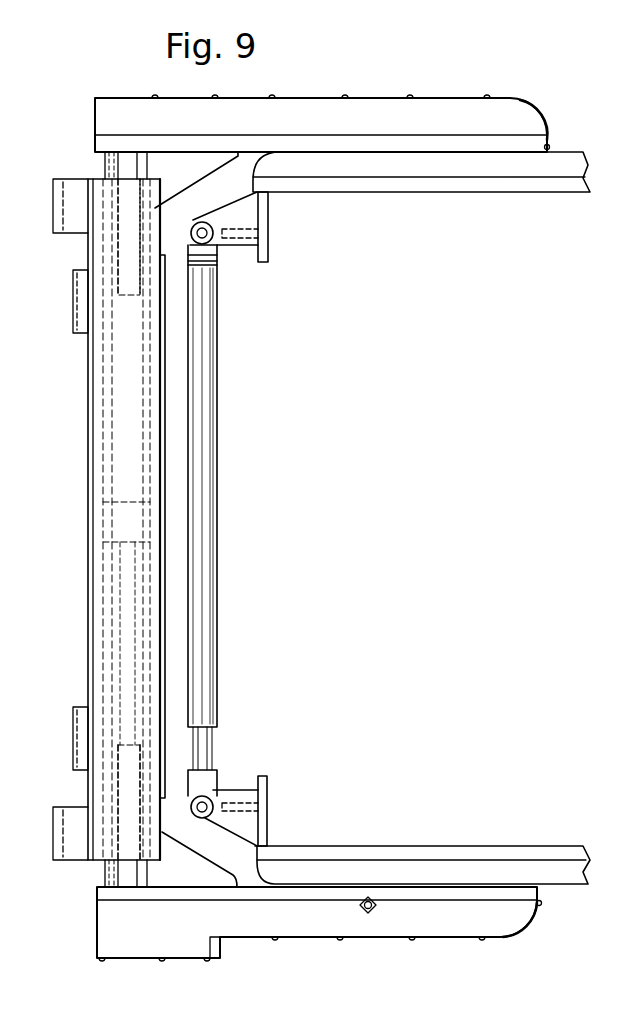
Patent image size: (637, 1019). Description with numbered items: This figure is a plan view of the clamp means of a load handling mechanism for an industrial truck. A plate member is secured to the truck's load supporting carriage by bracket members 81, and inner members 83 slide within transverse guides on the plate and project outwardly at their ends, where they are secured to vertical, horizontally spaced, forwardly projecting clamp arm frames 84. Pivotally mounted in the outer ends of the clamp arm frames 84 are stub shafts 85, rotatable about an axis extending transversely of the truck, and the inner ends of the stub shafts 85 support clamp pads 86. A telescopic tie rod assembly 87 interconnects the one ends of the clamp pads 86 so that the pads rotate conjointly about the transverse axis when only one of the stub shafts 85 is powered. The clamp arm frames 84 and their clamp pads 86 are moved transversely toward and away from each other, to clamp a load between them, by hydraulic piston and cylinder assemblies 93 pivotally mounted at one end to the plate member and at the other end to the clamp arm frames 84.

The bracket members 81 is at (77, 295).
The inner members 83 is at (120, 164).
The clamp arm frames 84 is at (422, 96).
The stub shafts 85 is at (503, 148).
The clamp pads 86 is at (447, 185).
The telescopic tie rod assembly 87 is at (207, 497).
The hydraulic piston and cylinder assemblies 93 is at (118, 244).